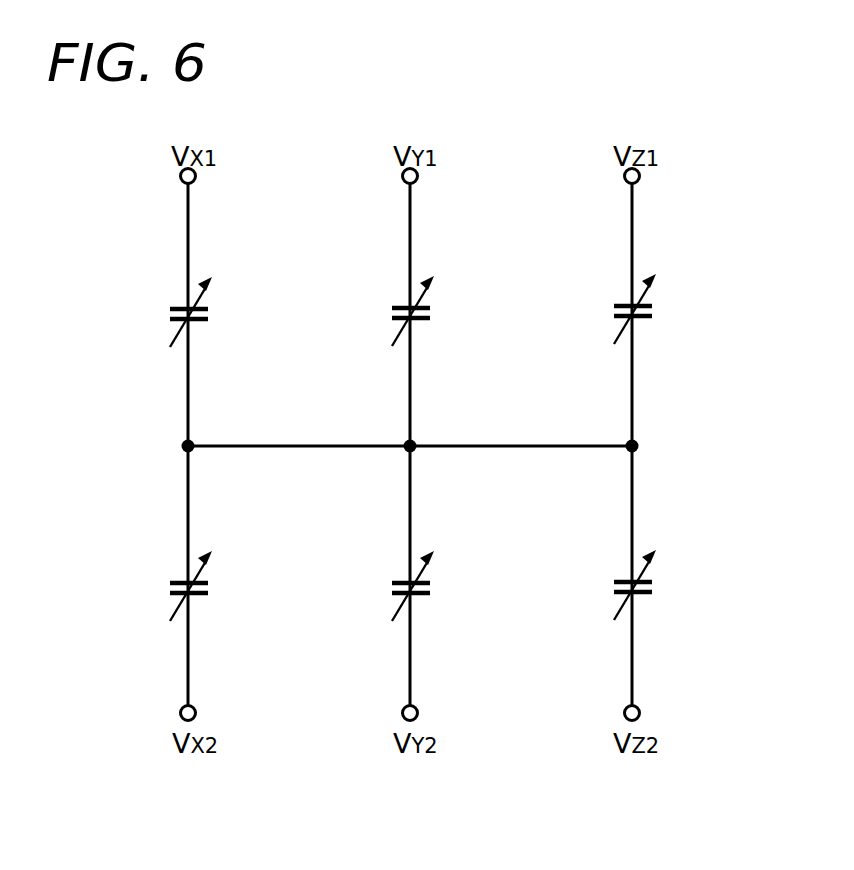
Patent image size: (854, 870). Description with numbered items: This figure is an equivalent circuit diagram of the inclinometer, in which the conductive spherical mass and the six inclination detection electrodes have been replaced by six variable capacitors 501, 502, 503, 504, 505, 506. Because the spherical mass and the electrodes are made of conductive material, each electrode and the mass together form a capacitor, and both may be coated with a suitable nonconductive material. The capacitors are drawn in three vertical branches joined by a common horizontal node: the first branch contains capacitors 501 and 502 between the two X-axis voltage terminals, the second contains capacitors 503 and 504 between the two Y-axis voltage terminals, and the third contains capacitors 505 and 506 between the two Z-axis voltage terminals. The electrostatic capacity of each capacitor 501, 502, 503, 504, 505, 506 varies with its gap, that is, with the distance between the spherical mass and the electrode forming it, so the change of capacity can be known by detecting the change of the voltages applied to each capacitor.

The capacitor 501 is at (208, 317).
The capacitor 502 is at (208, 592).
The capacitor 503 is at (430, 315).
The capacitor 504 is at (430, 590).
The capacitor 505 is at (652, 313).
The capacitor 506 is at (652, 590).